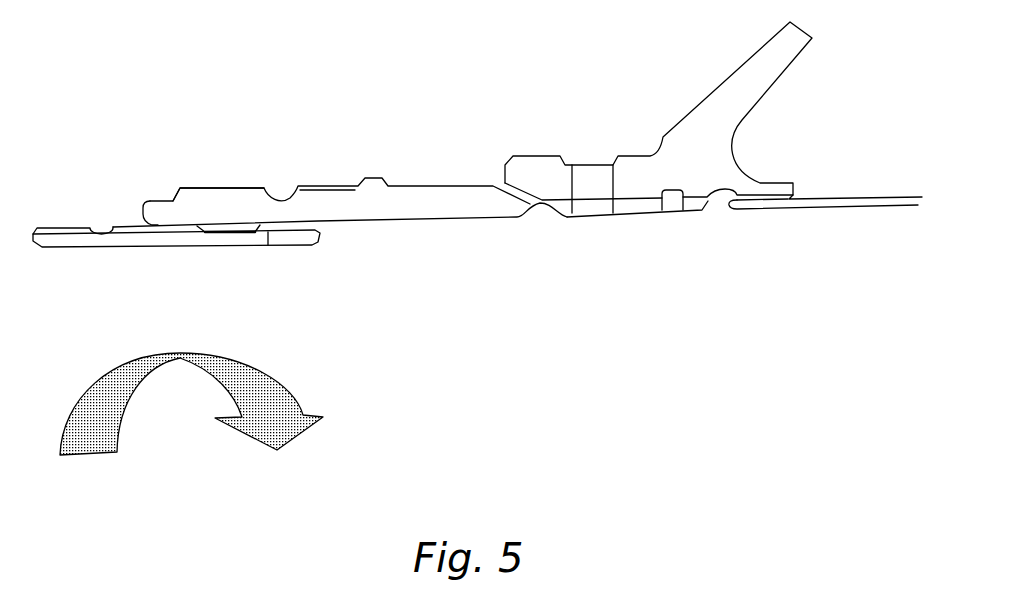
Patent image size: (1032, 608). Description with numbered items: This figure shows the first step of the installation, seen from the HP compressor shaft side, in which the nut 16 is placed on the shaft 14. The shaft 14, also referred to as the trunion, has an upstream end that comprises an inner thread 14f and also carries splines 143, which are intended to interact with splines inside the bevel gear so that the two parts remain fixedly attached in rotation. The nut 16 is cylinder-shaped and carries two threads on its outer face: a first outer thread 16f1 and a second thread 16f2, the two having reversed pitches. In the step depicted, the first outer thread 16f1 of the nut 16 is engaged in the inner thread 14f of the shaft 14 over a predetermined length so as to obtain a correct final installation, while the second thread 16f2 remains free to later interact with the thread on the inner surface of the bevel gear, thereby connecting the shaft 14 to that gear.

The shaft 14 is at (653, 163).
The inner thread 14f is at (228, 227).
The splines 143 is at (253, 192).
The nut 16 is at (123, 238).
The first outer thread 16f1 is at (176, 222).
The second thread 16f2 is at (65, 223).